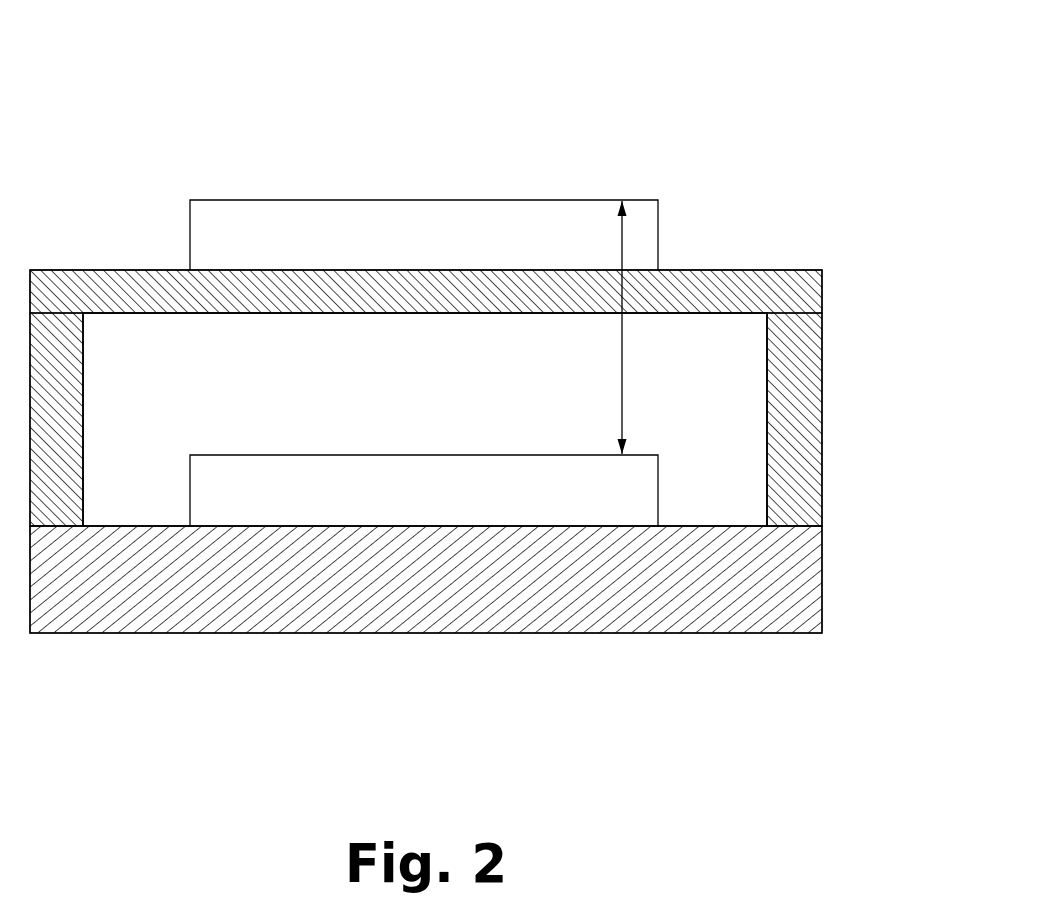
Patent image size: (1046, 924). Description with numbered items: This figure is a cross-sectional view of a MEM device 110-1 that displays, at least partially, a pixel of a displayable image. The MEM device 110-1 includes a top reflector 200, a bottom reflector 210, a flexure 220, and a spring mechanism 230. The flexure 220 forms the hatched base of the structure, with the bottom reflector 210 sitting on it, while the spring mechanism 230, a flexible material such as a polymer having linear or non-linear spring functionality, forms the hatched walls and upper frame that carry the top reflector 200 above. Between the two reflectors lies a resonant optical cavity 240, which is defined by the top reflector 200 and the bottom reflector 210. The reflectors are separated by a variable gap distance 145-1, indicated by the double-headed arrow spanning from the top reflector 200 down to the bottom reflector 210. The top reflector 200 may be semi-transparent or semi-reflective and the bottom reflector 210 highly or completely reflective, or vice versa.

The MEM device 110-1 is at (290, 85).
The top reflector 200 is at (425, 201).
The bottom reflector 210 is at (442, 508).
The flexure 220 is at (542, 607).
The spring mechanism 230 is at (822, 413).
The resonant optical cavity 240 is at (257, 386).
The variable gap distance 145-1 is at (622, 386).